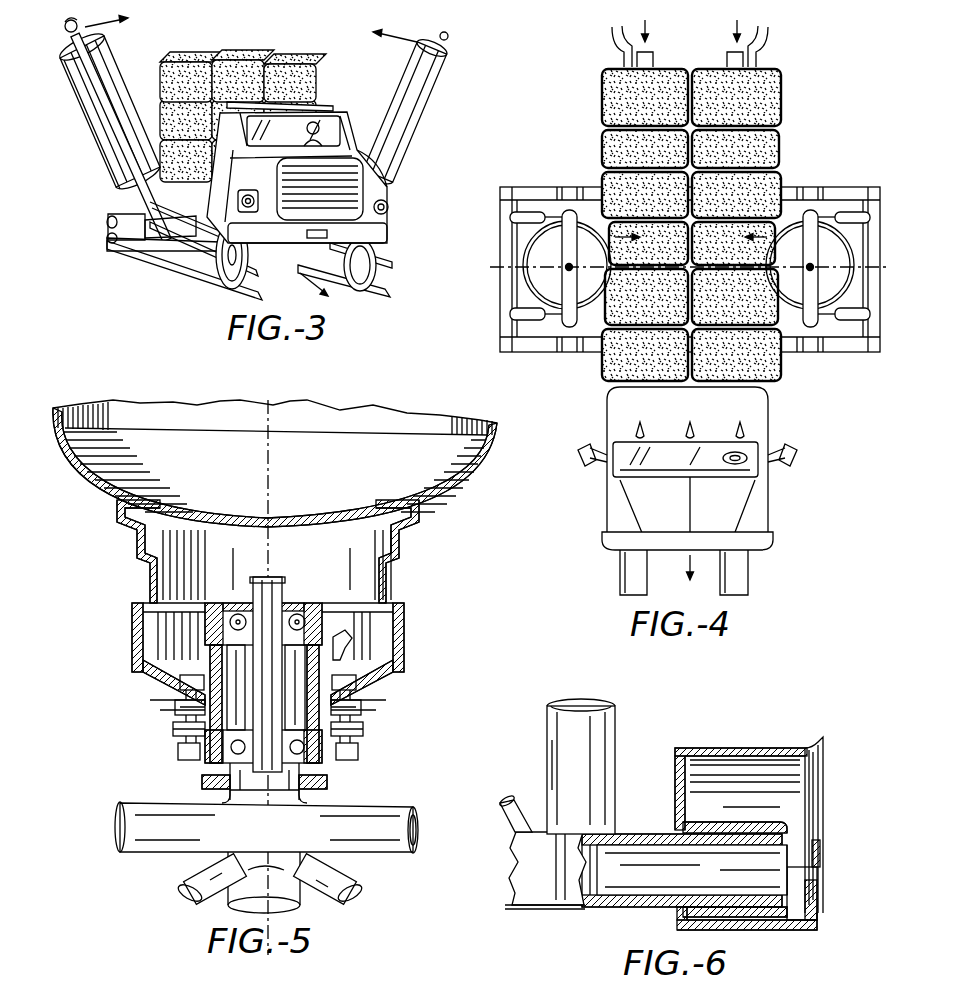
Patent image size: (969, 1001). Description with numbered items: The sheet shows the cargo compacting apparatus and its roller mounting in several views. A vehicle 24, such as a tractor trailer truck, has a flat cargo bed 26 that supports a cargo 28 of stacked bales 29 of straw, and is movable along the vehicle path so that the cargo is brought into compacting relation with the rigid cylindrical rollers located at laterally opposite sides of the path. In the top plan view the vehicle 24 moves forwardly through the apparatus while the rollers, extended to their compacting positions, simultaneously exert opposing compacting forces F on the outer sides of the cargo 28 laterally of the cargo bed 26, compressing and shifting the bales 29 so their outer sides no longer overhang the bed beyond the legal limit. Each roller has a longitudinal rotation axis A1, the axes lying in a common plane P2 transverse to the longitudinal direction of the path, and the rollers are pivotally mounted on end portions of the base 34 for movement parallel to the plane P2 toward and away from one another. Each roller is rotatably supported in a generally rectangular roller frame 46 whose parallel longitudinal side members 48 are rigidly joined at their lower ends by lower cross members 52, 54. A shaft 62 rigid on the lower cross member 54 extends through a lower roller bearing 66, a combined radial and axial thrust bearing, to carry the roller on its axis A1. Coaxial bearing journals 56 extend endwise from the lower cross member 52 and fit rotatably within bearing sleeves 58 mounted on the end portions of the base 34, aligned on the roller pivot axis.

In FIG. 3, the vehicle 24 is at (340, 108).
In FIG. 4, the vehicle 24 is at (770, 416).
In FIG. 3, the cargo bed 26 is at (213, 228).
In FIG. 4, the cargo bed 26 is at (742, 60).
In FIG. 3, the cargo 28 is at (270, 102).
In FIG. 4, the cargo 28 is at (685, 225).
In FIG. 3, the stacked bales 29 is at (303, 80).
In FIG. 4, the stacked bales 29 is at (677, 137).
In FIG. 4, the rotation axis A1 is at (565, 267).
In FIG. 4, the common plane P2 is at (471, 270).
In FIG. 4, the compacting forces F is at (691, 239).
In FIG. 5, the shaft 62 is at (285, 588).
In FIG. 5, the lower roller bearing 66 is at (176, 713).
In FIG. 5, the lower cross member 54 is at (380, 842).
In FIG. 6, the roller frame 46 is at (573, 809).
In FIG. 6, the longitudinal side member 48 is at (613, 725).
In FIG. 6, the lower cross member 52 is at (528, 880).
In FIG. 6, the bearing journal 56 is at (637, 882).
In FIG. 6, the bearing sleeve 58 is at (708, 821).
In FIG. 6, the base 34 is at (820, 913).